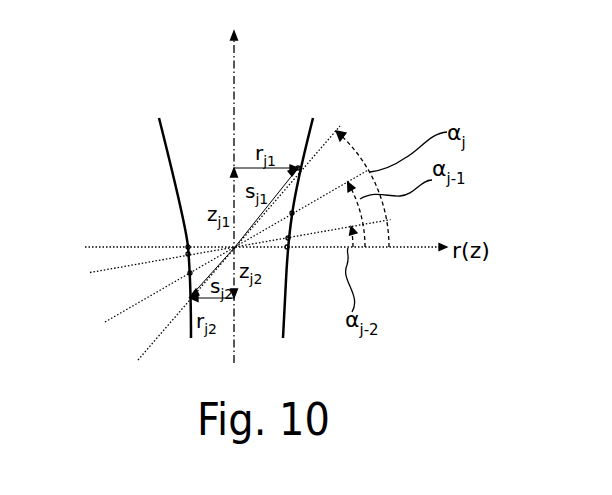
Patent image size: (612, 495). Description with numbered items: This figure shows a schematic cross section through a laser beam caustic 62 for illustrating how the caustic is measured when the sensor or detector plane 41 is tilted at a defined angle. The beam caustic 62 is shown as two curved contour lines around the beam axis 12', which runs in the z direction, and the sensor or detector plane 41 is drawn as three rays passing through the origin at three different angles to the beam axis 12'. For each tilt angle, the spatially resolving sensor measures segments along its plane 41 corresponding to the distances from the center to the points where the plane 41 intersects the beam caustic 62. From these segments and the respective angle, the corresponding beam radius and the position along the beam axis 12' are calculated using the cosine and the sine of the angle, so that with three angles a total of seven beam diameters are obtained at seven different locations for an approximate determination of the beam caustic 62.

The beam caustic 62 is at (165, 150).
The beam axis 12' is at (197, 190).
The sensor or camera plane 41 is at (337, 132).